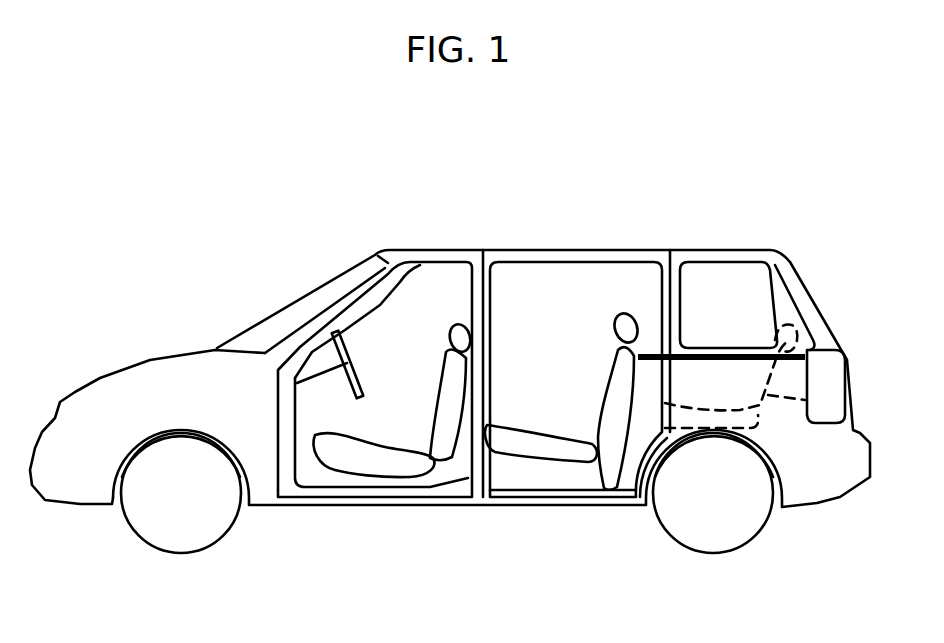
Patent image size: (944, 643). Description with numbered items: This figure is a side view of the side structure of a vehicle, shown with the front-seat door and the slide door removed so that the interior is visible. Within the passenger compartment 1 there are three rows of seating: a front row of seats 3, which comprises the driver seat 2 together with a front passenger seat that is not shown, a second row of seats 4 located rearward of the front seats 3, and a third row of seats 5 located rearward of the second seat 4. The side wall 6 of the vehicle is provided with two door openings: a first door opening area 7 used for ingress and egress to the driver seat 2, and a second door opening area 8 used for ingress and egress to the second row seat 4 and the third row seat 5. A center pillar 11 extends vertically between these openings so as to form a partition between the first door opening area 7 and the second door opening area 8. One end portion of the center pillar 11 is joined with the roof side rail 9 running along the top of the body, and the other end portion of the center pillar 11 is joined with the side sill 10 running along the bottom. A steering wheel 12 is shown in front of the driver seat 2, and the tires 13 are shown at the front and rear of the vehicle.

The passenger compartment 1 is at (370, 312).
The driver seat 2 is at (370, 460).
The front row of seats 3 is at (395, 446).
The second row of seats 4 is at (538, 448).
The third row of seats 5 is at (810, 392).
The side wall 6 is at (245, 375).
The first door opening area 7 is at (416, 290).
The second door opening area 8 is at (582, 288).
The roof side rail 9 is at (478, 250).
The side sill 10 is at (445, 497).
The center pillar 11 is at (476, 383).
The steering wheel 12 is at (330, 336).
The tires 13 is at (190, 532).